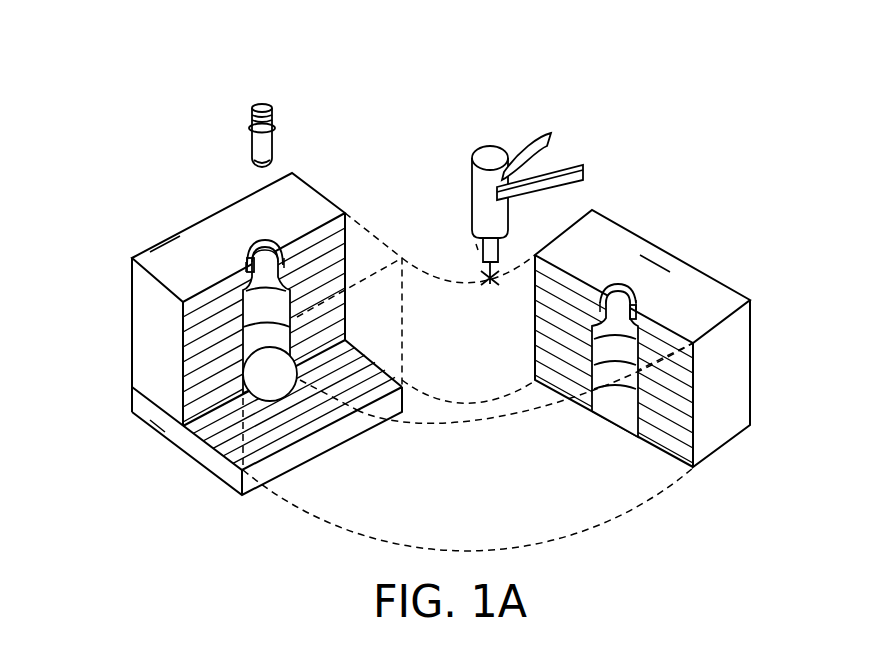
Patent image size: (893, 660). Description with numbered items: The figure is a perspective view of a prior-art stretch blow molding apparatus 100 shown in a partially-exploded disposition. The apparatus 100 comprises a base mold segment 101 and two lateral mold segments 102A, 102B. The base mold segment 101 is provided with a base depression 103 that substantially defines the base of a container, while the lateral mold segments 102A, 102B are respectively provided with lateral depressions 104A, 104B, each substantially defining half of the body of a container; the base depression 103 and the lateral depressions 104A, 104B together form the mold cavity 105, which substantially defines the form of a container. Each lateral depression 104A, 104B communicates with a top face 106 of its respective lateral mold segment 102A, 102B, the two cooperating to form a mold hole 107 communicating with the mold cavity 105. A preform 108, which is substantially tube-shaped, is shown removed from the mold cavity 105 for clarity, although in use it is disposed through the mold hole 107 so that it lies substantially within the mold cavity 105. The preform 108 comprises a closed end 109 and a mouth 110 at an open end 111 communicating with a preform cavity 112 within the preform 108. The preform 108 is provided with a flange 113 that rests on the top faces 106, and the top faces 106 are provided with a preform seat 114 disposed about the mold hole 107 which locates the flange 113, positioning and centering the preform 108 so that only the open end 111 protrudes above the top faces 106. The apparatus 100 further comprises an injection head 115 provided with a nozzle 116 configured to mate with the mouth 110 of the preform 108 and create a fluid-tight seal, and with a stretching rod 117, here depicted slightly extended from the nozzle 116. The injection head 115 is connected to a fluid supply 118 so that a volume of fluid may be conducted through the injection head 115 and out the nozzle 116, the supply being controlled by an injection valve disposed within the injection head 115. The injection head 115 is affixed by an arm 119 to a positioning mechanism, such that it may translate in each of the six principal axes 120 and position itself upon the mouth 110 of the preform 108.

The stretch blow molding apparatus 100 is at (672, 503).
The base mold segment 101 is at (228, 470).
The lateral mold segment 102A is at (131, 306).
The lateral mold segment 102B is at (728, 427).
The base depression 103 is at (283, 402).
The lateral depression 104A is at (335, 375).
The lateral depression 104B is at (618, 400).
The mold cavity 105 is at (158, 428).
The top face 106 is at (165, 250).
The mold hole 107 is at (262, 246).
The preform 108 is at (276, 141).
The closed end 109 is at (281, 165).
The mouth 110 is at (274, 104).
The open end 111 is at (264, 104).
The preform cavity 112 is at (250, 128).
The flange 113 is at (292, 117).
The preform seat 114 is at (250, 265).
The injection head 115 is at (487, 153).
The nozzle 116 is at (504, 242).
The stretching rod 117 is at (472, 247).
The fluid supply 118 is at (557, 140).
The arm 119 is at (579, 193).
The six principal axes 120 is at (489, 286).